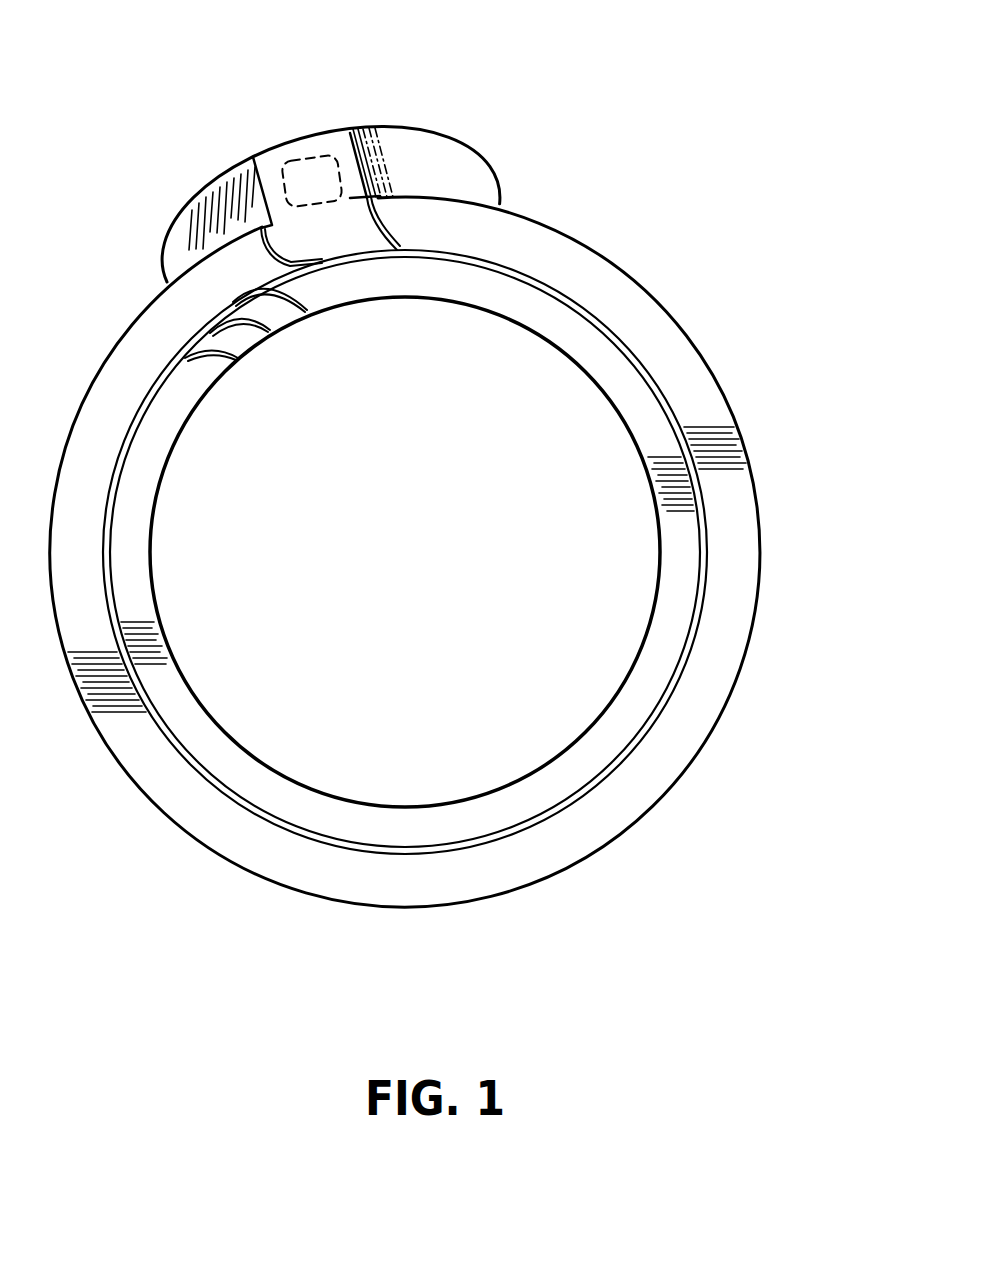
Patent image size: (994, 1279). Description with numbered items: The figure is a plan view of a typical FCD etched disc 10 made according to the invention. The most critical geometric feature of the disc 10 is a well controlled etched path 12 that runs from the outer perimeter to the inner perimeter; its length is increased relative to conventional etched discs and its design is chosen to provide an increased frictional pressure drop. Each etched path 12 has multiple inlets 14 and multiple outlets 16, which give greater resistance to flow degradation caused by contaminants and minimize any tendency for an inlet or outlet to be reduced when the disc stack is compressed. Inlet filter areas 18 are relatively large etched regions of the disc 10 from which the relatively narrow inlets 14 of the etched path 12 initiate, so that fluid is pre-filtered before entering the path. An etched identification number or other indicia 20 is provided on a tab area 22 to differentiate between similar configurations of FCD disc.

The etched disc 10 is at (756, 306).
The etched path 12 is at (712, 588).
The inlets 14 is at (253, 220).
The outlets 16 is at (282, 342).
The inlet filter areas 18 is at (508, 180).
The indicia 20 is at (312, 158).
The tab area 22 is at (250, 143).